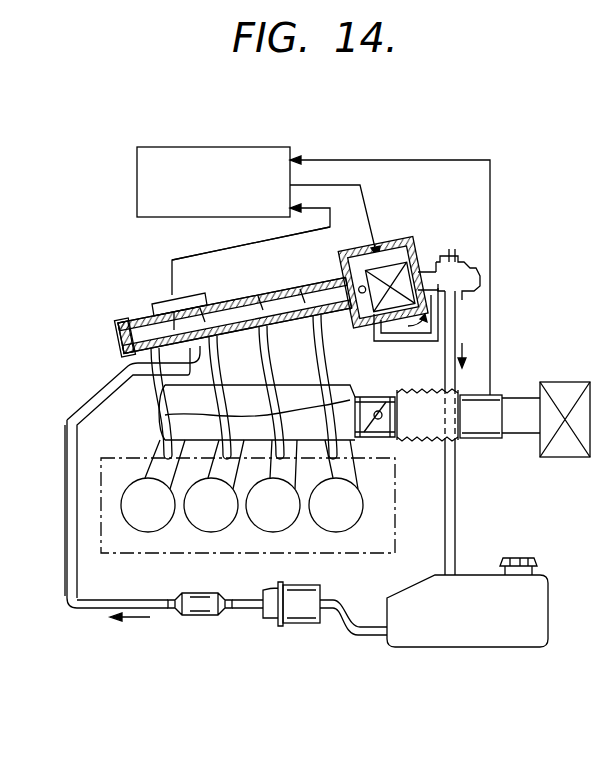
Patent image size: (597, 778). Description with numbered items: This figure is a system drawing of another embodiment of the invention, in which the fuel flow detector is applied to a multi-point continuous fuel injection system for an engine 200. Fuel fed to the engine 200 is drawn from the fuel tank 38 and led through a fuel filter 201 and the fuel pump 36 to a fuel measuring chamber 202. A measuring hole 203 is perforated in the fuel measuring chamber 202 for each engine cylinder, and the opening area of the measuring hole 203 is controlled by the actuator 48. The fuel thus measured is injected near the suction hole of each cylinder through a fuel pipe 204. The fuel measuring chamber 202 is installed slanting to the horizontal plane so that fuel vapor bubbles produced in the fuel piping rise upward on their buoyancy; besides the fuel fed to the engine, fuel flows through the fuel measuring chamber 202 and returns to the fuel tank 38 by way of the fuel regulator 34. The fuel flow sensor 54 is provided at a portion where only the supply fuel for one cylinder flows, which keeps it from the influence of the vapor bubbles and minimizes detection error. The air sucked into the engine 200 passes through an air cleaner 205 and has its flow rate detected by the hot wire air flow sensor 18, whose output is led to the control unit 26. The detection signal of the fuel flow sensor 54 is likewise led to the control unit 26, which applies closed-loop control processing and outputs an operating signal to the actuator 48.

The control unit 26 is at (240, 150).
The fuel measuring chamber 202 is at (260, 285).
The measuring hole 203 is at (118, 340).
The fuel flow sensor 54 is at (150, 316).
The actuator 48 is at (388, 258).
The fuel regulator 34 is at (456, 250).
The air flow sensor 18 is at (496, 400).
The air cleaner 205 is at (565, 383).
The fuel pipe 204 is at (160, 424).
The engine 200 is at (100, 527).
The fuel pump 36 is at (197, 608).
The fuel filter 201 is at (298, 625).
The fuel tank 38 is at (505, 648).